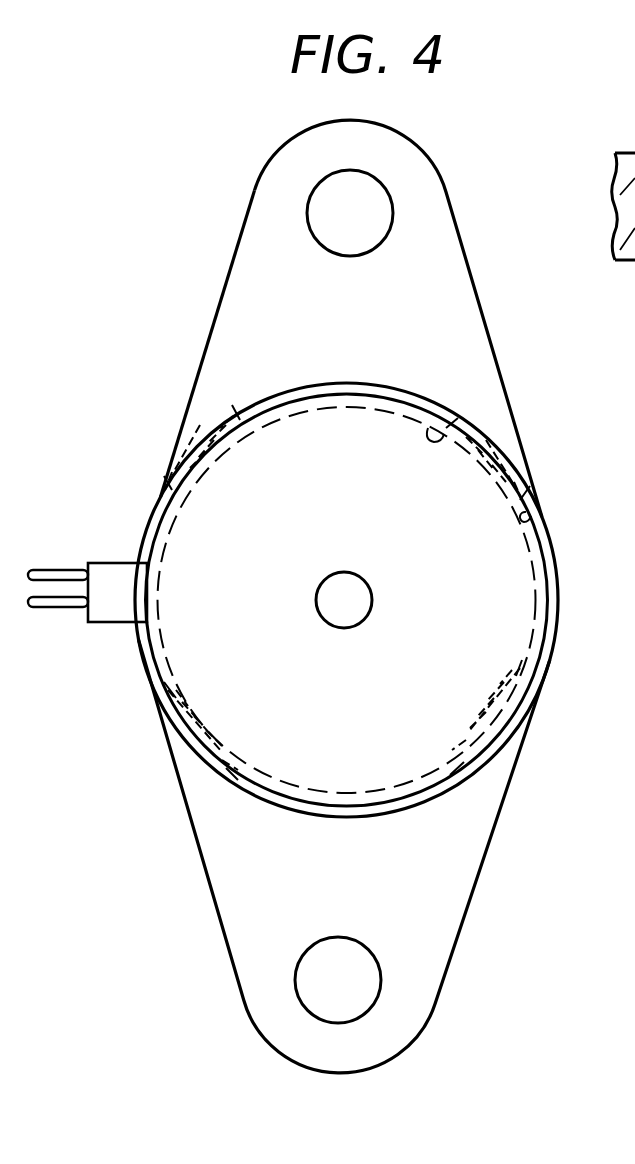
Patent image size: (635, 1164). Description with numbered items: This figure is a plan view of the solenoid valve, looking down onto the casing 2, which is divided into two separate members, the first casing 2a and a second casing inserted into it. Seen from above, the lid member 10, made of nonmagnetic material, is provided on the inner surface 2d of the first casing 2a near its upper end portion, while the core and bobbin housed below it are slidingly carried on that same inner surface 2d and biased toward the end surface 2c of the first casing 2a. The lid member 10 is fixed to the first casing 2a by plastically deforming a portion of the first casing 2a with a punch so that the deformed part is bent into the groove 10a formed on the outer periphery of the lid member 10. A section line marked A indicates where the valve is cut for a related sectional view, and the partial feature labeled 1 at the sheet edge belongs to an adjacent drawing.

The casing 2 is at (447, 810).
The first casing 2a is at (275, 806).
The end surface 2c is at (550, 561).
The inner surface 2d is at (527, 512).
The lid member 10 is at (500, 677).
The groove 10a is at (437, 422).
The section line A- A is at (520, 427).
The housing (adjacent figure fragment) 1 is at (623, 259).